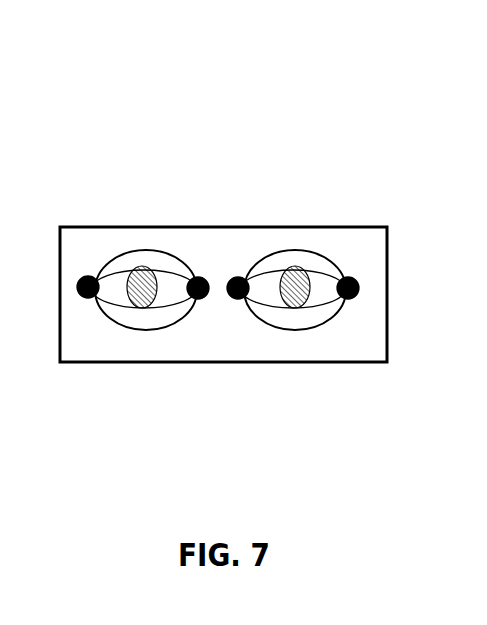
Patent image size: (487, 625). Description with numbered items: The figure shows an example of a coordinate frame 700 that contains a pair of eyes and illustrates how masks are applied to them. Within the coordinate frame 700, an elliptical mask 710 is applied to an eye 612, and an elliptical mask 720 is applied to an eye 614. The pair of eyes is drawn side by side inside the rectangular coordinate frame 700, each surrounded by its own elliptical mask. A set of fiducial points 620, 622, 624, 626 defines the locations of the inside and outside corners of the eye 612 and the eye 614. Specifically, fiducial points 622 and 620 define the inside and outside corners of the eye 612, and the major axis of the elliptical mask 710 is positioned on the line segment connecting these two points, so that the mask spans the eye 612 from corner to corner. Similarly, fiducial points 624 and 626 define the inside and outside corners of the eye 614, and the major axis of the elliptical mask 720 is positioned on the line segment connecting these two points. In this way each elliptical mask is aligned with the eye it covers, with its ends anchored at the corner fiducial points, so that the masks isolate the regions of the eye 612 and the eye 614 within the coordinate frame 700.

The coordinate frame 700 is at (190, 54).
The elliptical mask 710 is at (138, 247).
The elliptical mask 720 is at (302, 244).
The eye 612 is at (100, 270).
The eye 614 is at (250, 272).
The fiducial point 620 is at (80, 300).
The fiducial point 622 is at (200, 300).
The fiducial point 624 is at (237, 300).
The fiducial point 626 is at (358, 298).